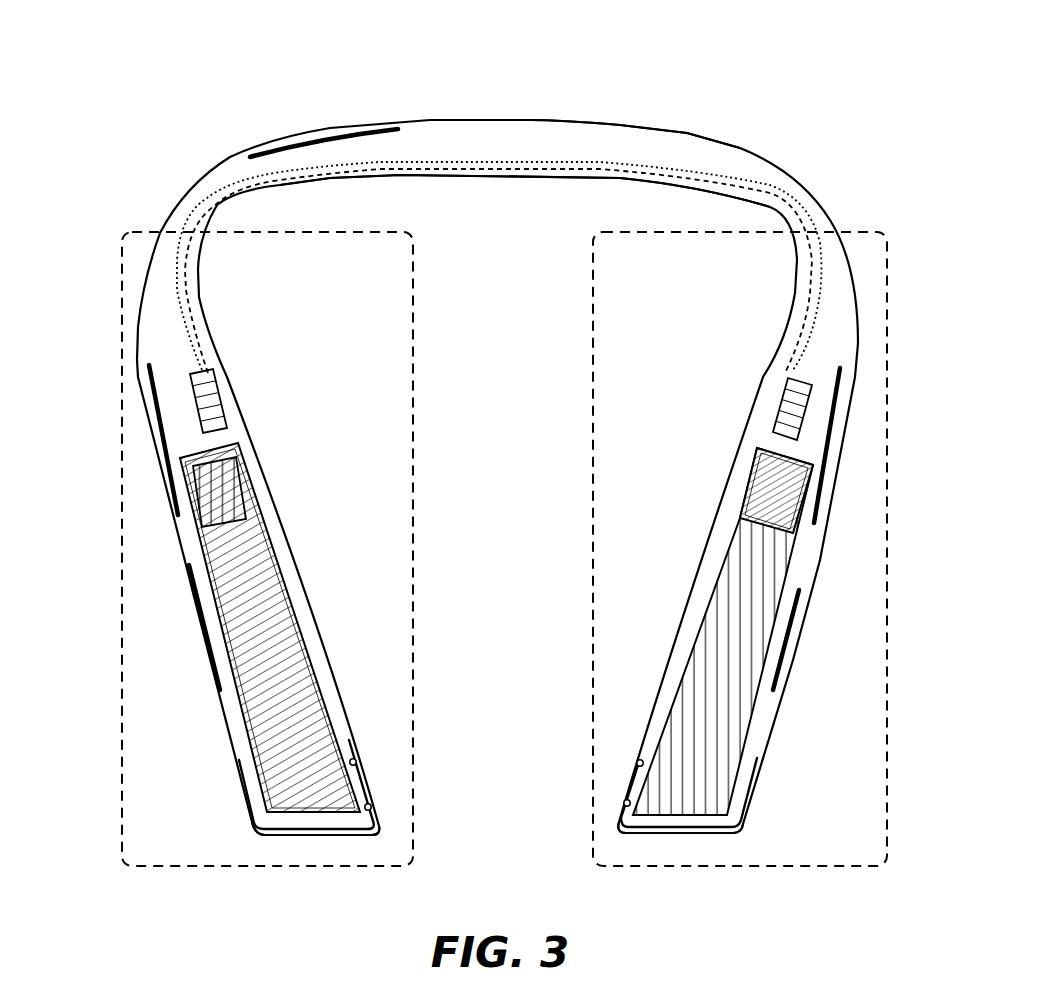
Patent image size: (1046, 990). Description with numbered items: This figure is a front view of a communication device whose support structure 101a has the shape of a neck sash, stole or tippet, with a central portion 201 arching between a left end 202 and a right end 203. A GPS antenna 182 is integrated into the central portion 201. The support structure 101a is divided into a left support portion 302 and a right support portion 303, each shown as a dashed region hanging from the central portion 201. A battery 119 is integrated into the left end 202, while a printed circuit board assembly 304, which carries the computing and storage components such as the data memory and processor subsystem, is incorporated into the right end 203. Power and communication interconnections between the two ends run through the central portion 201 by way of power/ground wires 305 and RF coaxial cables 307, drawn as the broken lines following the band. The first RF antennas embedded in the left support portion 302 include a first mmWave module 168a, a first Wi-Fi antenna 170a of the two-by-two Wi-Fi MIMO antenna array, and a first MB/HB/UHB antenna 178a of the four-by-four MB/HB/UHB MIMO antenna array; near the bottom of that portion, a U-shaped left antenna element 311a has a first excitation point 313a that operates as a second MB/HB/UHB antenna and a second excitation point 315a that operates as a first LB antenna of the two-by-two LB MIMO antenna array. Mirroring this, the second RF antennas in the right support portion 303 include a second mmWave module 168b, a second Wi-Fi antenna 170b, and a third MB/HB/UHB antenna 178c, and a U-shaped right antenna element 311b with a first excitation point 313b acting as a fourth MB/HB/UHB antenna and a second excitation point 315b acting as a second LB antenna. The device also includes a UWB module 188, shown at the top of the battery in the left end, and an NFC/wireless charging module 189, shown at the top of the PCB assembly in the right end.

The support structure 101a is at (137, 333).
The central portion 201 is at (532, 118).
The RF coaxial cables 307 is at (487, 177).
The power/ground wires 305 is at (467, 158).
The GPS antenna 182 is at (372, 124).
The third MB/HB/UHB antenna 178c is at (162, 443).
The first MB/HB/UHB antenna 178a is at (833, 447).
The second Wi-Fi antenna 170b is at (200, 620).
The first Wi-Fi antenna 170a is at (805, 600).
The second mmWave module 168b is at (213, 390).
The first mmWave module 168a is at (785, 403).
The printed circuit board (PCB) assembly 304 is at (277, 637).
The NFC/wireless charging module 189 is at (230, 492).
The battery 119 is at (722, 602).
The UWB module 188 is at (748, 493).
The U-shaped right antenna element 311b is at (243, 800).
The U-shaped left antenna element 311a is at (760, 783).
The first excitation point 313b is at (358, 763).
The first excitation point 313a is at (633, 760).
The second excitation point 315b is at (372, 807).
The second excitation point 315a is at (620, 805).
The right end 203 is at (313, 833).
The left end 202 is at (662, 833).
The right support portion 303 is at (368, 343).
The left support portion 302 is at (642, 343).